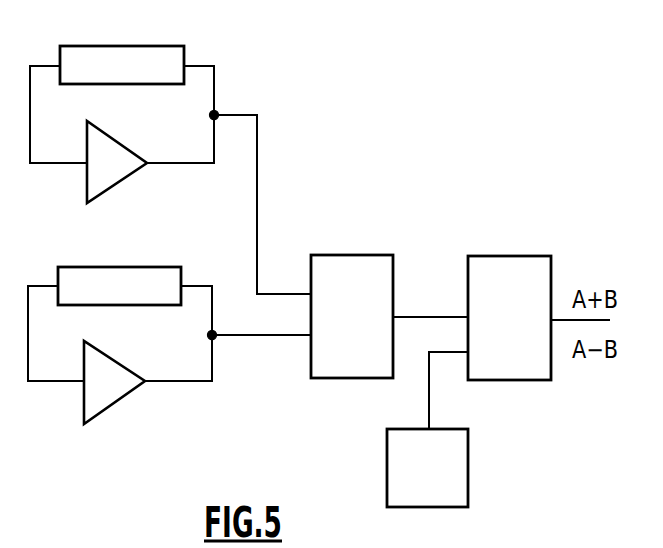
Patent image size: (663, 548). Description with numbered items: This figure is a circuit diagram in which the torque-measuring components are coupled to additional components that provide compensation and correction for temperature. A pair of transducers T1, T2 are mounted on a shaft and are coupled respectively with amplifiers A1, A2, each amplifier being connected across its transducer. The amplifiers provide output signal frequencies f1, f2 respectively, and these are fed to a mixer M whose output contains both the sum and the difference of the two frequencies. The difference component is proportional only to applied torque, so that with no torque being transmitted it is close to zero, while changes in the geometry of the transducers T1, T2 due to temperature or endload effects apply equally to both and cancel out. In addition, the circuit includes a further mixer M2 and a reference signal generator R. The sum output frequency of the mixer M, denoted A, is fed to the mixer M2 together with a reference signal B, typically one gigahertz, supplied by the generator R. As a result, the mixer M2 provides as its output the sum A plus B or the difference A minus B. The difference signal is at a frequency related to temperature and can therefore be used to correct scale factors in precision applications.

The transducer T1 is at (97, 53).
The transducer T2 is at (95, 275).
The amplifier A1 is at (112, 176).
The amplifier A2 is at (110, 395).
The output signal frequency f1 is at (281, 277).
The output signal frequency f2 is at (281, 362).
The mixer M is at (361, 328).
The output frequency F1+F2 A is at (441, 297).
The further mixer M2 is at (527, 328).
The reference signal B is at (448, 381).
The reference signal generator R is at (434, 483).